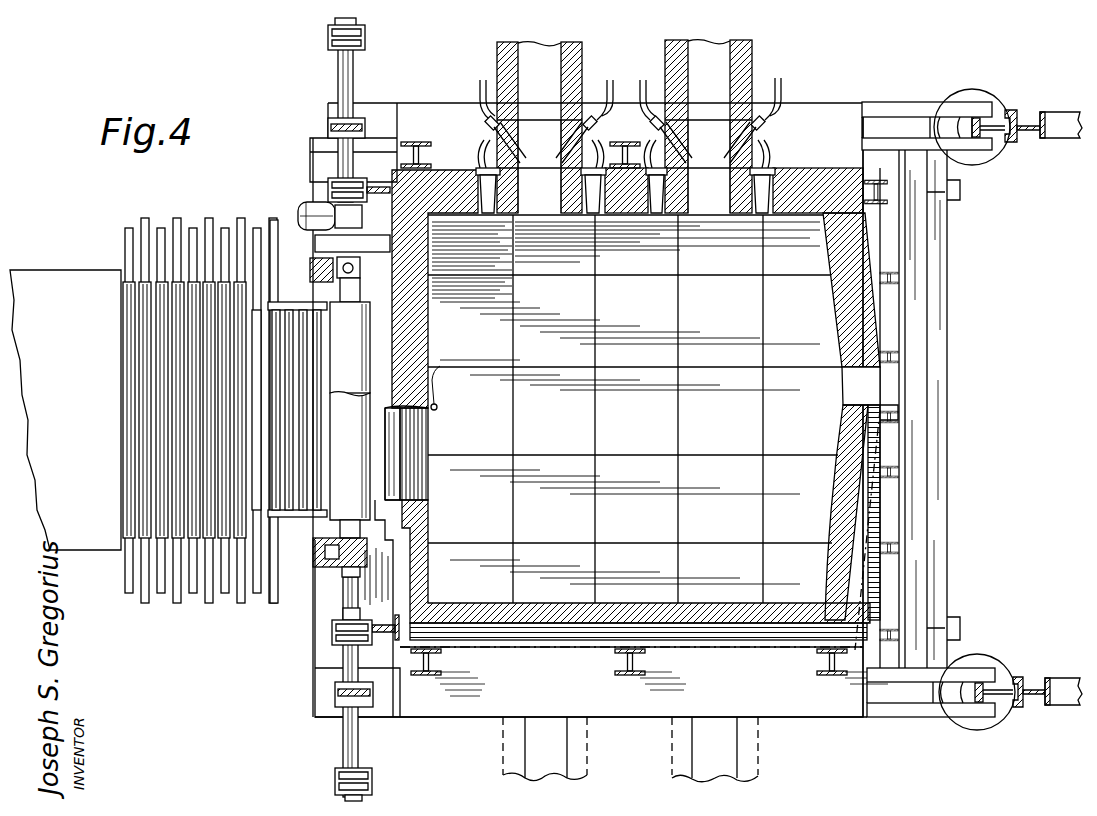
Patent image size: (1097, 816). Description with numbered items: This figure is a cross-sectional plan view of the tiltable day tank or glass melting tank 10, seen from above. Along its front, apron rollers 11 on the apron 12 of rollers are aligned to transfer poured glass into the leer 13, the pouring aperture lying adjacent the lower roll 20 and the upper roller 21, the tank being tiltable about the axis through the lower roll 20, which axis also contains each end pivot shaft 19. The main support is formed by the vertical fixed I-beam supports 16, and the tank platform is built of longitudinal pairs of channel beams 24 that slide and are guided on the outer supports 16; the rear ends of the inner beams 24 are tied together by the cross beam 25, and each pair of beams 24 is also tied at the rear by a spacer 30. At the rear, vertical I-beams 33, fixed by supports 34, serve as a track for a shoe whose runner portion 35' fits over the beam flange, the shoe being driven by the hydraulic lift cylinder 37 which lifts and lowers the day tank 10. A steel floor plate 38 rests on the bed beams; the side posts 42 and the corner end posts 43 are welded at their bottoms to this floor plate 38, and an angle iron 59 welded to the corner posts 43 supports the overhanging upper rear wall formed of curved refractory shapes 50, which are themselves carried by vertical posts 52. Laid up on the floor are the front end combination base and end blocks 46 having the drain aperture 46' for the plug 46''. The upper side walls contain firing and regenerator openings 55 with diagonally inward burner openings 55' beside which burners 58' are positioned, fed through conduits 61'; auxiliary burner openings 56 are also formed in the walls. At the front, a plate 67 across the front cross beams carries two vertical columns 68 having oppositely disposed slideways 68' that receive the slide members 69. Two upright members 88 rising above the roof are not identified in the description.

The day tank 10 is at (430, 96).
The apron rollers 11 is at (298, 302).
The apron of rollers 12 is at (196, 224).
The leer 13 is at (58, 263).
The vertical fixed I-beamed supports 16 is at (328, 128).
The end pivot shaft 19 is at (332, 632).
The lower roll 20 is at (350, 456).
The upper roller 21 is at (350, 347).
The longitudinal channel beams 24 is at (875, 125).
The cross beam 25 is at (947, 270).
The spacer 30 is at (968, 112).
The rear vertical beams 33 is at (1017, 120).
The supports 34 is at (1060, 140).
The runner portion 35' is at (1029, 438).
The hydraulic lift cylinder 37 is at (990, 160).
The floor plate 38 is at (790, 712).
The posts 42 is at (420, 142).
The end posts 43 is at (872, 182).
The front end combination base and end blocks 46 is at (419, 506).
The drain aperture 46' is at (438, 414).
The plug 46'' is at (456, 376).
The curved rear end refractory shapes 50 is at (845, 432).
The vertical posts 52 is at (900, 416).
The firing ports or regenerator openings 55 is at (624, 166).
The burner openings 55' is at (621, 147).
The auxiliary burner openings 56 is at (767, 215).
The burners 58' is at (653, 134).
The angle iron 59 is at (480, 152).
The conduits 61' is at (637, 92).
The plate 67 is at (313, 606).
The vertical columns 68 is at (325, 543).
The slideways 68' is at (320, 279).
The slide members 69 is at (345, 572).
The tube 88 is at (582, 52).